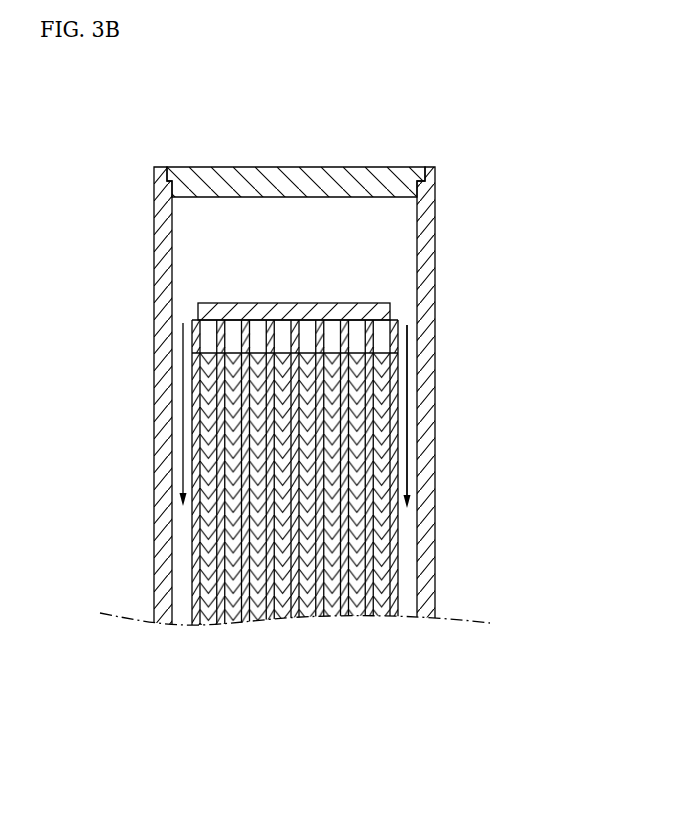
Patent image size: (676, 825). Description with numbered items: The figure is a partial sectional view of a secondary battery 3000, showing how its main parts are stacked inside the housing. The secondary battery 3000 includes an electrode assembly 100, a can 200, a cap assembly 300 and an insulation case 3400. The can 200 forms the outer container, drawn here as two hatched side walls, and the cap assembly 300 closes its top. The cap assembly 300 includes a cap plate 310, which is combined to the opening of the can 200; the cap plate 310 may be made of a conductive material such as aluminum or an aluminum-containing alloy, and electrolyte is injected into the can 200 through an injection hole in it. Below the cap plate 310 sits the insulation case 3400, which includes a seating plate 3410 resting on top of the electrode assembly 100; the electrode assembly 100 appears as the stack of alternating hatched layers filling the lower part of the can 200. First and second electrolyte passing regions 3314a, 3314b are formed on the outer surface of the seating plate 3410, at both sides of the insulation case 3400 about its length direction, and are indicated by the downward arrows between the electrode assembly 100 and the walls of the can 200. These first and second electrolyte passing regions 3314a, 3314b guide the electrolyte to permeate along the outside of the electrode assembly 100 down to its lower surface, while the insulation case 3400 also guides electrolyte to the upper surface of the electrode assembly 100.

The secondary battery 3000 is at (120, 120).
The cap assembly 300 is at (296, 154).
The cap plate 310 is at (285, 178).
The can 200 is at (430, 392).
The insulation case 3400 is at (402, 300).
The seating plate 3410 is at (297, 312).
The first electrolyte passing region 3314a is at (193, 314).
The second electrolyte passing region 3314b is at (397, 313).
The electrode assembly 100 is at (411, 455).